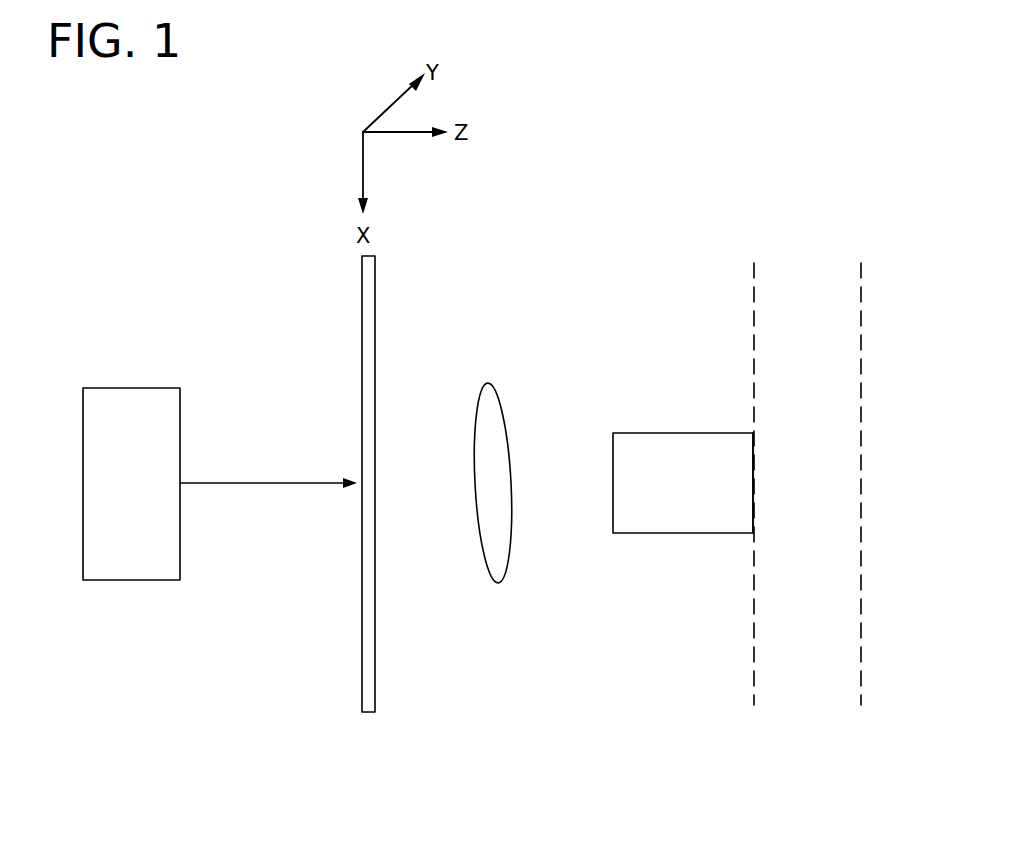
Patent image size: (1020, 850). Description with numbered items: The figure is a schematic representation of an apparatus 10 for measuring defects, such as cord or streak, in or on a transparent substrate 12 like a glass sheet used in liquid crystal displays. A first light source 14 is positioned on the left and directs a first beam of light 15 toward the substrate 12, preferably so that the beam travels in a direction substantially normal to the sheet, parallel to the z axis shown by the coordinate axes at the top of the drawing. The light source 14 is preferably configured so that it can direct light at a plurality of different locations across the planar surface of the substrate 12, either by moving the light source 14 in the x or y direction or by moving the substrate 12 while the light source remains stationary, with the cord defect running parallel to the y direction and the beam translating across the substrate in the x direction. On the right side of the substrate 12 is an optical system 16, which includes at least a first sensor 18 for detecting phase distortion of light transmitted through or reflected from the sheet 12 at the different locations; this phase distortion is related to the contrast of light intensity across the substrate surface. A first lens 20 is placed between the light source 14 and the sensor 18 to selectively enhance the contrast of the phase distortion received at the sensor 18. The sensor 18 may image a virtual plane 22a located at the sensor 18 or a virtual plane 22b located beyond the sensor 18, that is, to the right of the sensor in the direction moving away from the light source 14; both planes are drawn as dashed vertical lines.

The apparatus 10 is at (589, 180).
The transparent substrate 12 is at (362, 643).
The first light source 14 is at (130, 388).
The first beam of light 15 is at (243, 483).
The optical system 16 is at (632, 386).
The first sensor 18 is at (754, 472).
The first lens 20 is at (486, 533).
The virtual plane 22a is at (755, 317).
The virtual plane 22b is at (862, 317).